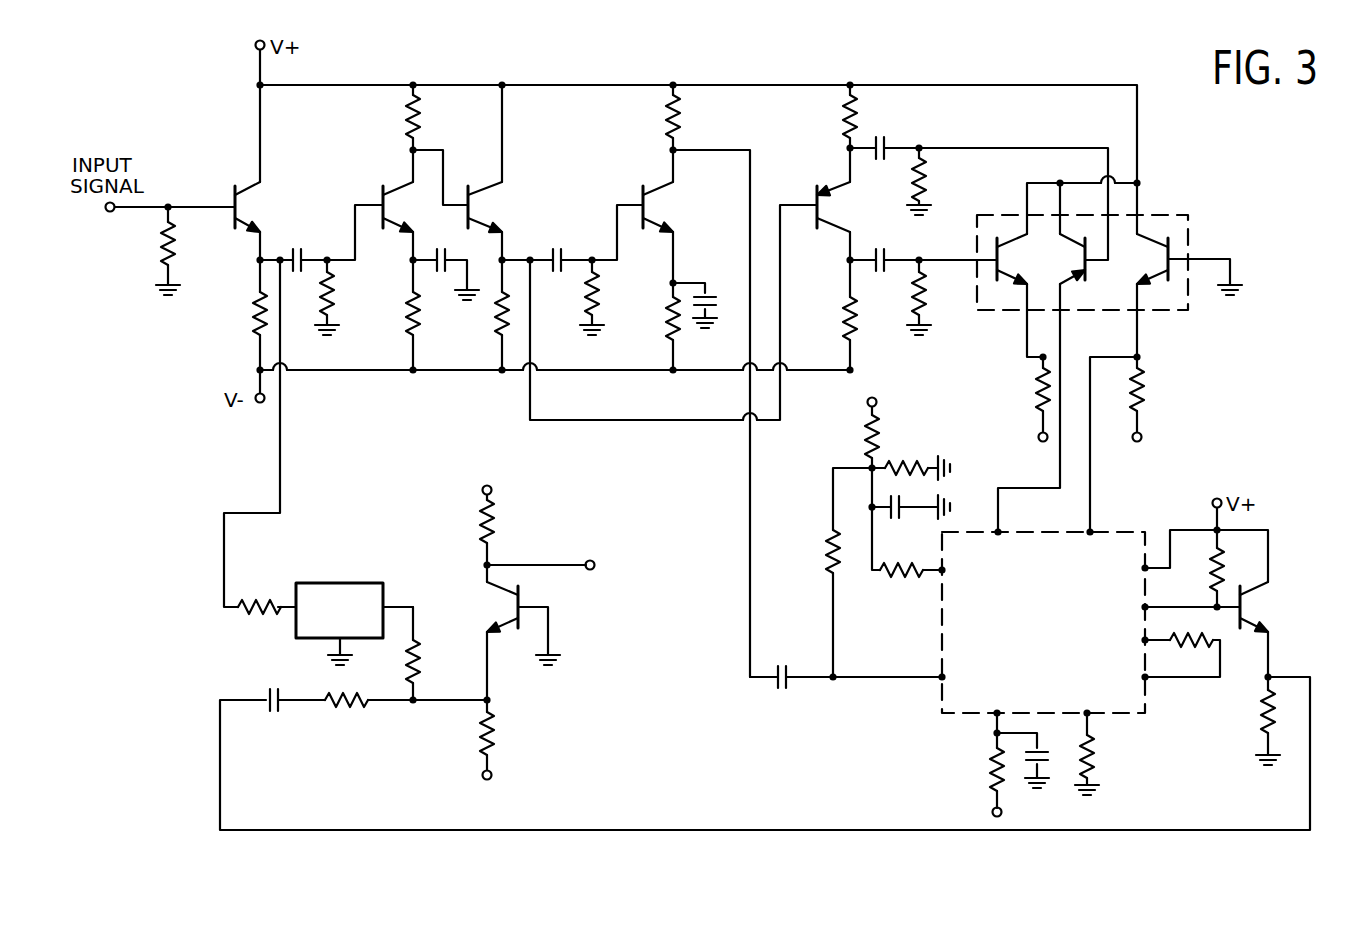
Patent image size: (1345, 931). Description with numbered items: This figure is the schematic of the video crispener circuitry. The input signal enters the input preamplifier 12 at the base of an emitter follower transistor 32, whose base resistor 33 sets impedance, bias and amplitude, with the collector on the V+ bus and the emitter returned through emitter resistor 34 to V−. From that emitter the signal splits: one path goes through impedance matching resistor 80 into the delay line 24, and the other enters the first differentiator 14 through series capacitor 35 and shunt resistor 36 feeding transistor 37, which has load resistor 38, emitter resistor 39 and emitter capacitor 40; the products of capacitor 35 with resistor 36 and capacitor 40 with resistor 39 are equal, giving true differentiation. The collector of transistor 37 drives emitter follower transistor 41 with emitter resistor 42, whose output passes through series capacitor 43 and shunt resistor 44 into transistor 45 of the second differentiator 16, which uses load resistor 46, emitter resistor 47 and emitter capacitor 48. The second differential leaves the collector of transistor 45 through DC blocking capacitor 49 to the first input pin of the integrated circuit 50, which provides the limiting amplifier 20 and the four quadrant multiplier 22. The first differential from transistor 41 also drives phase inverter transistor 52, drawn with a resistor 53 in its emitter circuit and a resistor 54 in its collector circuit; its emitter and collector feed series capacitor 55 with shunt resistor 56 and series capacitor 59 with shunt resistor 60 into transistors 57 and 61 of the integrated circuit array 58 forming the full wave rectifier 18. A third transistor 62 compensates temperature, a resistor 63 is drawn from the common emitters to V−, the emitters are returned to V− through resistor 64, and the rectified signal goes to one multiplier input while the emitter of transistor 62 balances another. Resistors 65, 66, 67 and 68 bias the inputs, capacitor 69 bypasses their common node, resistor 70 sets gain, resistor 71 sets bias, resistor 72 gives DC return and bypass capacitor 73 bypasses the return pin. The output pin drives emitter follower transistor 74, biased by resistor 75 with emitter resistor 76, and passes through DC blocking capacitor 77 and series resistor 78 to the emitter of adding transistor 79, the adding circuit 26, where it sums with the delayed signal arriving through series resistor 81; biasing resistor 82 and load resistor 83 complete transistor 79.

The input preamplifier 12 is at (255, 227).
The first differentiator 14 is at (437, 227).
The second differentiator 16 is at (700, 381).
The full wave rectifier 18 is at (1019, 308).
The limiting amplifier 20 is at (963, 654).
The four quadrant multiplier 22 is at (943, 713).
The delay circuit 24 is at (325, 606).
The adding circuit 26 is at (581, 589).
The transistor 32 is at (235, 180).
The resistor 33 is at (166, 247).
The emitter resistor 34 is at (256, 307).
The series capacitor 35 is at (299, 252).
The shunt resistor 36 is at (334, 298).
The transistor 37 is at (397, 231).
The load resistor 38 is at (408, 130).
The emitter resistor 39 is at (405, 328).
The emitter capacitor 40 is at (452, 280).
The emitter follower transistor 41 is at (485, 231).
The emitter resistor 42 is at (499, 328).
The series capacitor 43 is at (565, 274).
The shunt resistor 44 is at (601, 307).
The transistor 45 is at (652, 228).
The load resistor 46 is at (658, 123).
The emitter resistor 47 is at (663, 340).
The emitter capacitor 48 is at (712, 296).
The DC blocking capacitor 49 is at (793, 690).
The integrated circuit 50 is at (963, 654).
The phase inverter transistor 52 is at (829, 232).
The resistor 53 is at (844, 316).
The resistor 54 is at (853, 120).
The series capacitor 55 is at (890, 232).
The shunt resistor 56 is at (911, 314).
The transistor 57 is at (1012, 286).
The integrated circuit array 58 is at (1109, 354).
The series capacitor 59 is at (900, 148).
The shunt resistor 60 is at (925, 178).
The transistor 61 is at (1067, 284).
The third transistor 62 is at (1143, 286).
The resistor 63 is at (1028, 392).
The resistor 64 is at (1144, 390).
The resistor 65 is at (827, 544).
The resistor 66 is at (918, 578).
The resistor 67 is at (899, 445).
The resistor 68 is at (866, 436).
The capacitor 69 is at (889, 518).
The resistor 70 is at (1208, 638).
The resistor 71 is at (1093, 762).
The resistor 72 is at (992, 769).
The bypass capacitor 73 is at (1039, 758).
The transistor 74 is at (1258, 634).
The resistor 75 is at (1214, 587).
The emitter resistor 76 is at (1267, 723).
The DC blocking capacitor 77 is at (279, 711).
The series resistor 78 is at (364, 705).
The adding transistor 79 is at (525, 580).
The impedance matching resistor 80 is at (274, 604).
The series resistor 81 is at (434, 653).
The biasing resistor 82 is at (485, 746).
The load resistor 83 is at (491, 530).